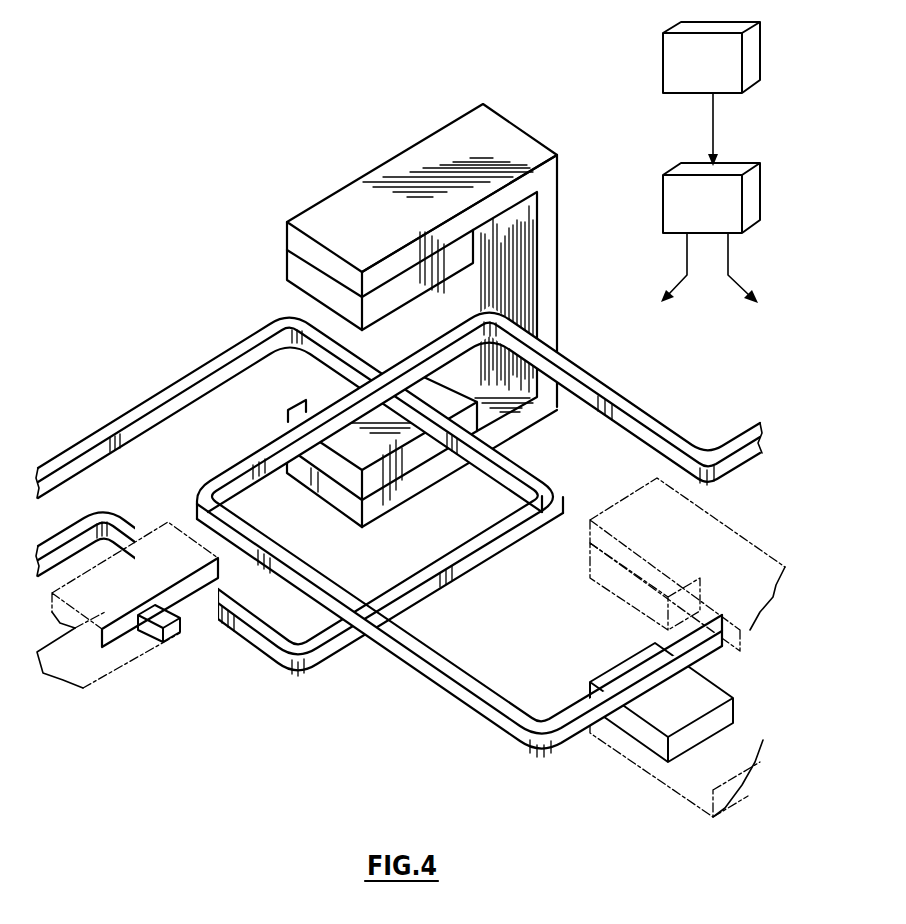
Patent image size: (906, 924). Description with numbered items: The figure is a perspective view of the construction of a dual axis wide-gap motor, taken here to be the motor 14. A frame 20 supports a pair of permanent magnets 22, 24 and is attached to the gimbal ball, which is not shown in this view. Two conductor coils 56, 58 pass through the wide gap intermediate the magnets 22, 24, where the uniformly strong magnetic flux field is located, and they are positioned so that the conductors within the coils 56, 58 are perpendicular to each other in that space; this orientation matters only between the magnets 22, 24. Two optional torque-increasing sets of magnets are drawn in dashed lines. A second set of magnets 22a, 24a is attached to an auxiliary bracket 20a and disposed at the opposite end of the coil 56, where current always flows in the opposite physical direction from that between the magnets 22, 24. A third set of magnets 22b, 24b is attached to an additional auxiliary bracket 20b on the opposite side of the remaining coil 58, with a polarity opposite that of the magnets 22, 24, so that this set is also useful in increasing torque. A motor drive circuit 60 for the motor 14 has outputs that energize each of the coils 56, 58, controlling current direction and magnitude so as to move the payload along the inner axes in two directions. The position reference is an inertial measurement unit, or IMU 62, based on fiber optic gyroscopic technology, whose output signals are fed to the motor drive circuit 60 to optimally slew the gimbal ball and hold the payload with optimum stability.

The motor 14 is at (297, 126).
The frame 20 is at (511, 140).
The magnet 22 is at (304, 410).
The magnet 24 is at (288, 263).
The conductor coil 56 is at (605, 390).
The conductor coil 58 is at (221, 364).
The motor drive circuit 60 is at (663, 195).
The inertial measurement unit (IMU) 62 is at (663, 70).
The auxiliary bracket 20a is at (637, 490).
The magnet 22a is at (600, 675).
The magnet 24a is at (592, 580).
The additional auxiliary bracket 20b is at (122, 668).
The magnet 22b is at (172, 630).
The magnet 24b is at (222, 577).